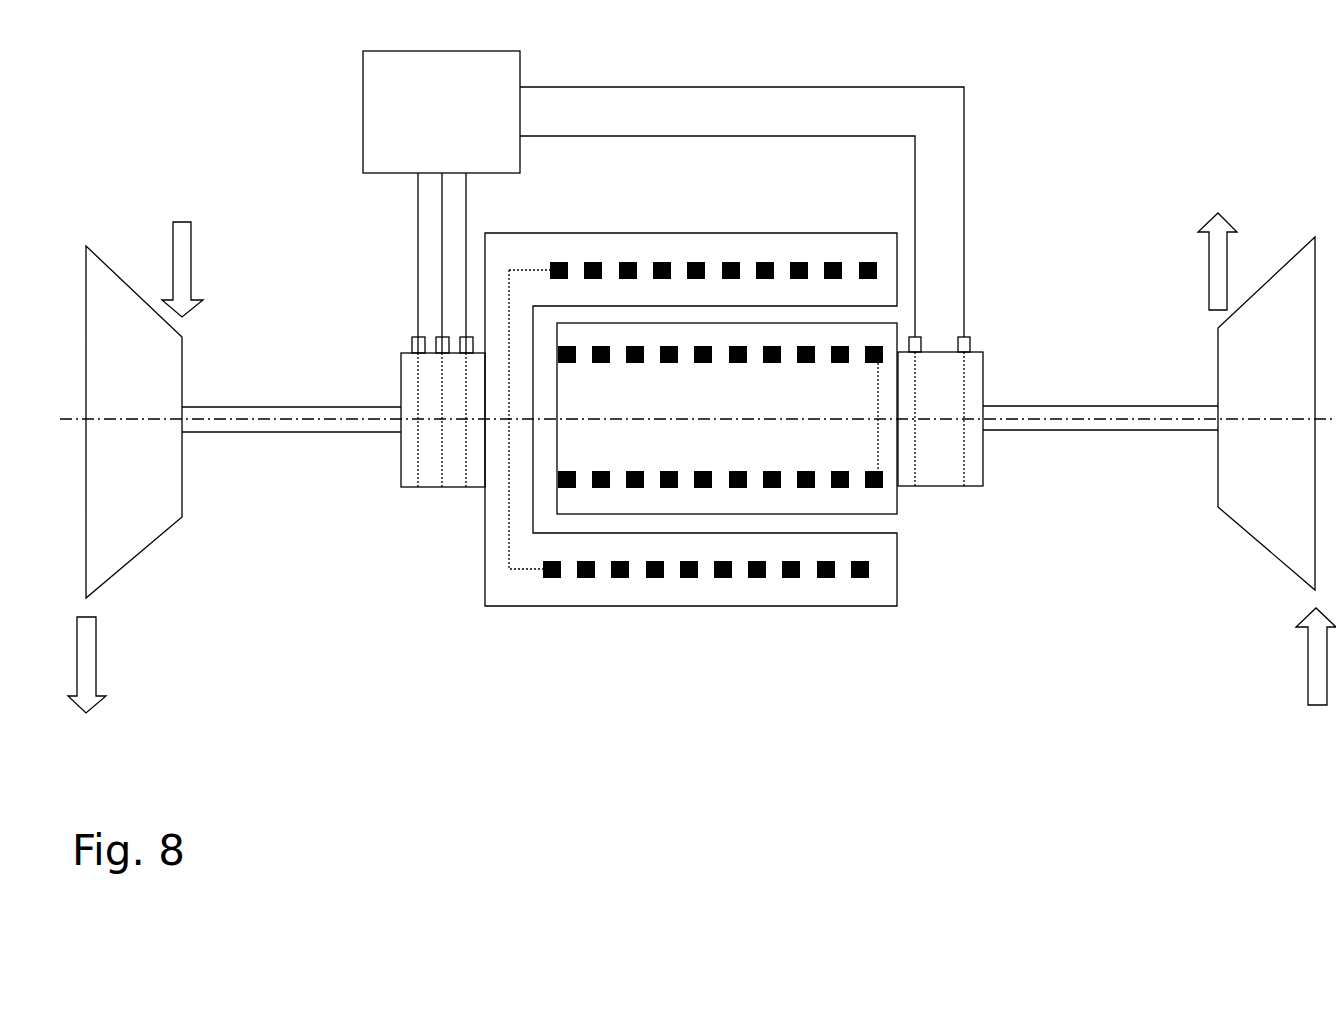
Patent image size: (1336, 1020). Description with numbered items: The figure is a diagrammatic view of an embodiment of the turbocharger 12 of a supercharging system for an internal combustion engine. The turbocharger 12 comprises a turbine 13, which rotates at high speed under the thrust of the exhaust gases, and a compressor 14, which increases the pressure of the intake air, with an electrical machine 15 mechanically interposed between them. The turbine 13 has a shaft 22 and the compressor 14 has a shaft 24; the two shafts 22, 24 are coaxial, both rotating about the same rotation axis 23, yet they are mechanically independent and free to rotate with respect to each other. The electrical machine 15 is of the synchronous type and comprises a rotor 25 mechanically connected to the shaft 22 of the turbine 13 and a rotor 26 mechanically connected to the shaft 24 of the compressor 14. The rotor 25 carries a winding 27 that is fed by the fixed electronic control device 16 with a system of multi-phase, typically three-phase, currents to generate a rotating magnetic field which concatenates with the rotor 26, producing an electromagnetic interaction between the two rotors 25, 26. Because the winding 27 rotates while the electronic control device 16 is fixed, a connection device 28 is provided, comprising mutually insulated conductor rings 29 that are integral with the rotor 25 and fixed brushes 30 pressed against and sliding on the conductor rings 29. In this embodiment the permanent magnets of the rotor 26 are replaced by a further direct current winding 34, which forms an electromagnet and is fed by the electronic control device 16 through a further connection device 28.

The turbocharger 12 is at (1275, 867).
The turbine 13 is at (145, 522).
The compressor 14 is at (1262, 518).
The electrical machine 15 is at (694, 488).
The electronic control device 16 is at (663, 202).
The shaft 22 is at (287, 412).
The rotation axis 23 is at (1152, 421).
The shaft 24 is at (1103, 405).
The rotor 25 is at (879, 250).
The rotor 26 is at (873, 504).
The winding 27 is at (697, 262).
The connection device 28 is at (438, 528).
The conductor rings 29 is at (416, 461).
The brushes 30 is at (412, 344).
The direct current winding 34 is at (870, 487).